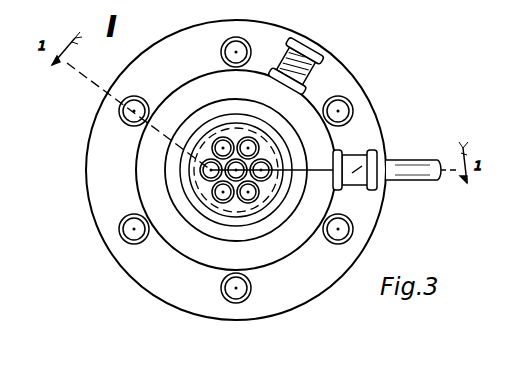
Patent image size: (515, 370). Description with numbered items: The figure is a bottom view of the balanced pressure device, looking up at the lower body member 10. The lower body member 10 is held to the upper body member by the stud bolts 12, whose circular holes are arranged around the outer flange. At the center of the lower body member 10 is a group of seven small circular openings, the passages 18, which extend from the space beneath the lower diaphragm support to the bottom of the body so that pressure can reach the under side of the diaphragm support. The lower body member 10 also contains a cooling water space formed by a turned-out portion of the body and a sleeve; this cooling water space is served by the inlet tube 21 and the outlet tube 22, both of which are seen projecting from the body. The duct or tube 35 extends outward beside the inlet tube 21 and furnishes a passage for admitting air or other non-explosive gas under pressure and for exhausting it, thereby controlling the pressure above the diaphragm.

The lower body member 10 is at (107, 163).
The stud bolts 12 is at (338, 110).
The passages 18 is at (262, 173).
The inlet tube 21 is at (373, 156).
The outlet tube 22 is at (312, 58).
The duct or tube 35 is at (397, 174).